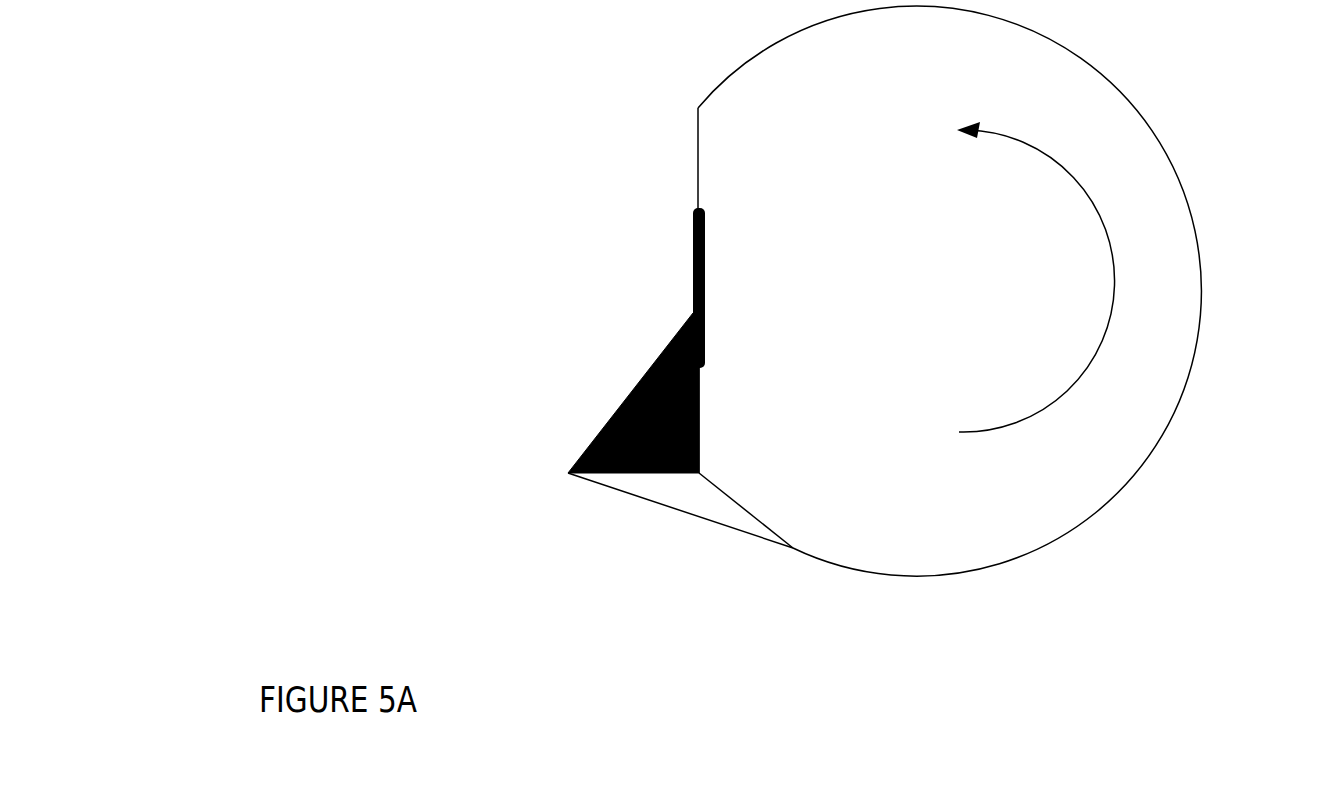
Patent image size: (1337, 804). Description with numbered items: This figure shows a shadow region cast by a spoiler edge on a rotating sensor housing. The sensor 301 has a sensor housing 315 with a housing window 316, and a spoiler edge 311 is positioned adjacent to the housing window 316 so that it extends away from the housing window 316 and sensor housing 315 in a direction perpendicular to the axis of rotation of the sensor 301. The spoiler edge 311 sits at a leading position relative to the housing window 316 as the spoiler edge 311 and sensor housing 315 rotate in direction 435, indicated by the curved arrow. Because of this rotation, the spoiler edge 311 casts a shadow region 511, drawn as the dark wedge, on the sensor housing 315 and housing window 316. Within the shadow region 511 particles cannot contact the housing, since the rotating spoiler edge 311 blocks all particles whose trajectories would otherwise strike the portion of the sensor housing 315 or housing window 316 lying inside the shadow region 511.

The sensor 301 is at (1206, 110).
The sensor housing 315 is at (698, 163).
The housing window 316 is at (693, 273).
The shadow region 511 is at (600, 428).
The spoiler edge 311 is at (657, 502).
The direction of rotation 435 is at (1100, 327).